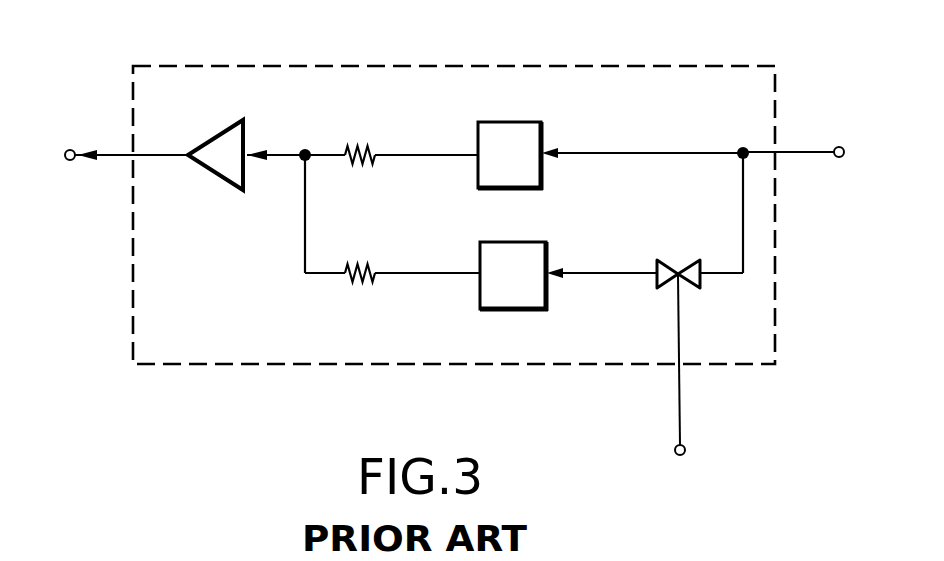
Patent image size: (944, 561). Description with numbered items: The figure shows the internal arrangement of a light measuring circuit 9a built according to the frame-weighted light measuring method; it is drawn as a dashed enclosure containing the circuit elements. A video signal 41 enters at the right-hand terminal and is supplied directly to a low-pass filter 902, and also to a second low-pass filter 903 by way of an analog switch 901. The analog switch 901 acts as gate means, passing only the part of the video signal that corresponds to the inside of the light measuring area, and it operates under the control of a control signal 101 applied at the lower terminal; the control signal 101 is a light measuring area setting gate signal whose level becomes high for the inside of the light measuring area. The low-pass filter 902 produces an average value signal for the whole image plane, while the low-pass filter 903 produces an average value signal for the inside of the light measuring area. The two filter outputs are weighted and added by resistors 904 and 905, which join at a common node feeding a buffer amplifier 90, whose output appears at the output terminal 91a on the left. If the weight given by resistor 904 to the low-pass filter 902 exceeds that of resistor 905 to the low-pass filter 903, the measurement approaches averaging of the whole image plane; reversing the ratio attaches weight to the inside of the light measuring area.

The light measuring circuit 9a is at (261, 65).
The output terminal (91a, 91b) 91a is at (69, 161).
The amplifier 90 is at (216, 172).
The resistor 904 is at (361, 146).
The resistor 905 is at (359, 264).
The low-pass filter 902 is at (530, 121).
The low-pass filter 903 is at (541, 243).
The analog switch 901 is at (682, 262).
The control signal 101 is at (681, 456).
The video signal 41 is at (838, 158).